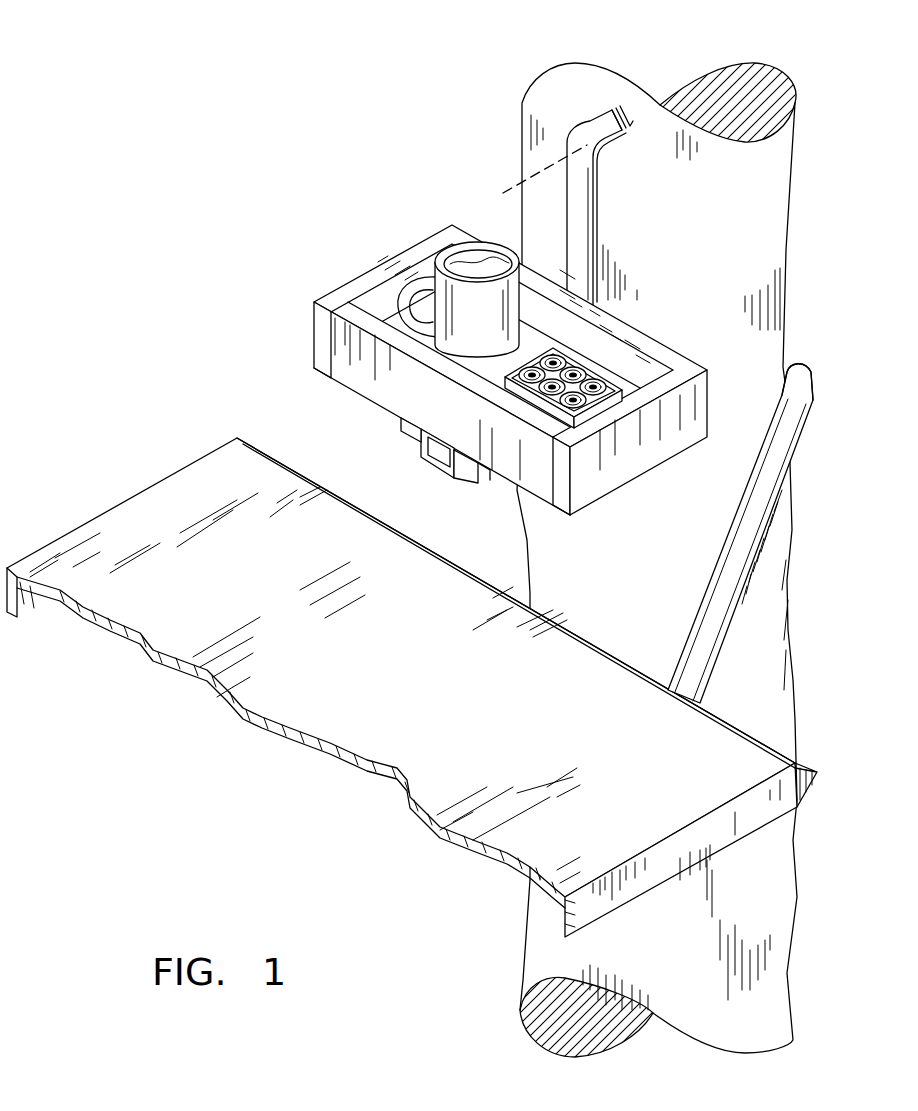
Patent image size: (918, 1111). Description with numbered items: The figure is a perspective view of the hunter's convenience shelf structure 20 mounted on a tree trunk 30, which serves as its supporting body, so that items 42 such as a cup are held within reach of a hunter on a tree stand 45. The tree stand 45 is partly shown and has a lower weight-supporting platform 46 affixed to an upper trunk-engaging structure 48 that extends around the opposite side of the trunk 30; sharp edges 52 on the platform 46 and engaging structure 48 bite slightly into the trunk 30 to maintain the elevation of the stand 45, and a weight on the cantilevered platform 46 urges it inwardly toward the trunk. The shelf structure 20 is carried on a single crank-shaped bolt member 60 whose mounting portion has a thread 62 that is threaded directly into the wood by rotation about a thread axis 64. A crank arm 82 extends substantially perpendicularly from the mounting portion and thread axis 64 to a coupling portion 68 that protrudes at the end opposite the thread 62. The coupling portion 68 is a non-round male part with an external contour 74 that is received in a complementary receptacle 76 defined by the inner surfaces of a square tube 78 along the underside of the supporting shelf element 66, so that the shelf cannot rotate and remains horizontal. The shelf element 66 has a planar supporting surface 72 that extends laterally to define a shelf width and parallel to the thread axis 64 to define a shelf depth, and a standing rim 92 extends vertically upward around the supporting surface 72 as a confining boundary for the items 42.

The convenience shelf structure 20 is at (533, 364).
The tree trunk 30 is at (757, 192).
The items 42 is at (525, 336).
The tree stand 45 is at (430, 676).
The weight-supporting platform 46 is at (412, 687).
The trunk-engaging structure 48 is at (803, 372).
The sharp edges 52 is at (552, 528).
The bolt member 60 is at (633, 161).
The thread 62 is at (642, 110).
The thread axis 64 is at (513, 187).
The supporting shelf element 66 is at (533, 361).
The coupling portion 68 is at (443, 452).
The planar supporting surface 72 is at (398, 322).
The external contour 74 is at (450, 478).
The complementary receptacle 76 is at (395, 463).
The square tube 78 is at (417, 438).
The crank arm 82 is at (600, 188).
The standing rim 92 is at (640, 365).